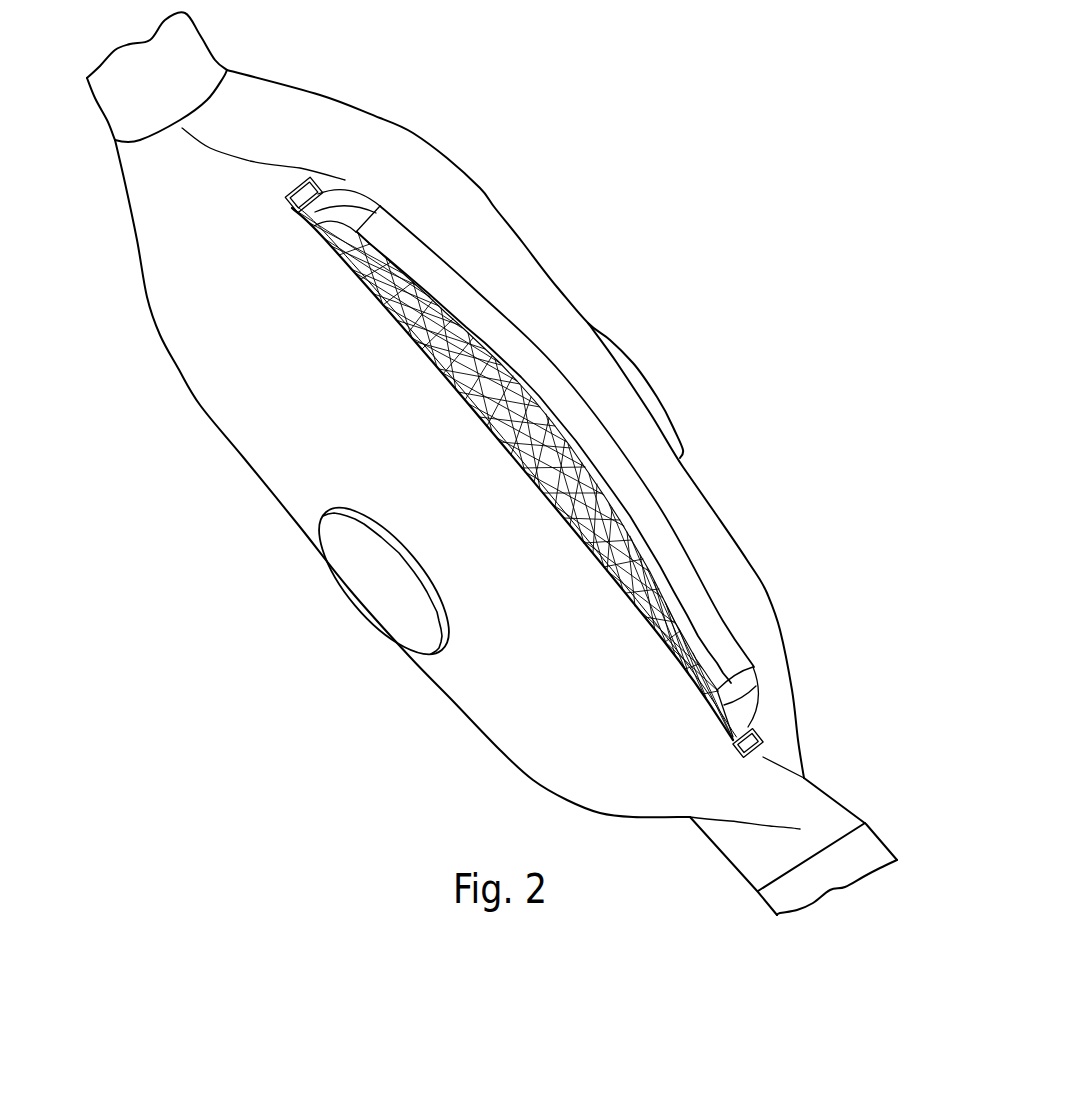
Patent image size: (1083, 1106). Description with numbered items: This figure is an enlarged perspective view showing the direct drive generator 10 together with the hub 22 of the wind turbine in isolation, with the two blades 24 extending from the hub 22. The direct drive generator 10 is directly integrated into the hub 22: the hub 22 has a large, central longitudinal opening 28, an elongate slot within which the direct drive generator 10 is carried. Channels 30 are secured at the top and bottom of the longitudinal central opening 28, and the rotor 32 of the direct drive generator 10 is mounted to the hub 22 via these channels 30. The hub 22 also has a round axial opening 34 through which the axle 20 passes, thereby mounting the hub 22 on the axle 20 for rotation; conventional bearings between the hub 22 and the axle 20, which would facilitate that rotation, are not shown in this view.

The direct drive generator 10 is at (470, 285).
The axle 20 is at (370, 598).
The hub 22 is at (205, 358).
The blades 24 is at (113, 108).
The longitudinal central opening 28 is at (303, 198).
The channels 30 is at (289, 198).
The rotor 32 is at (413, 252).
The round axial opening 34 is at (390, 531).